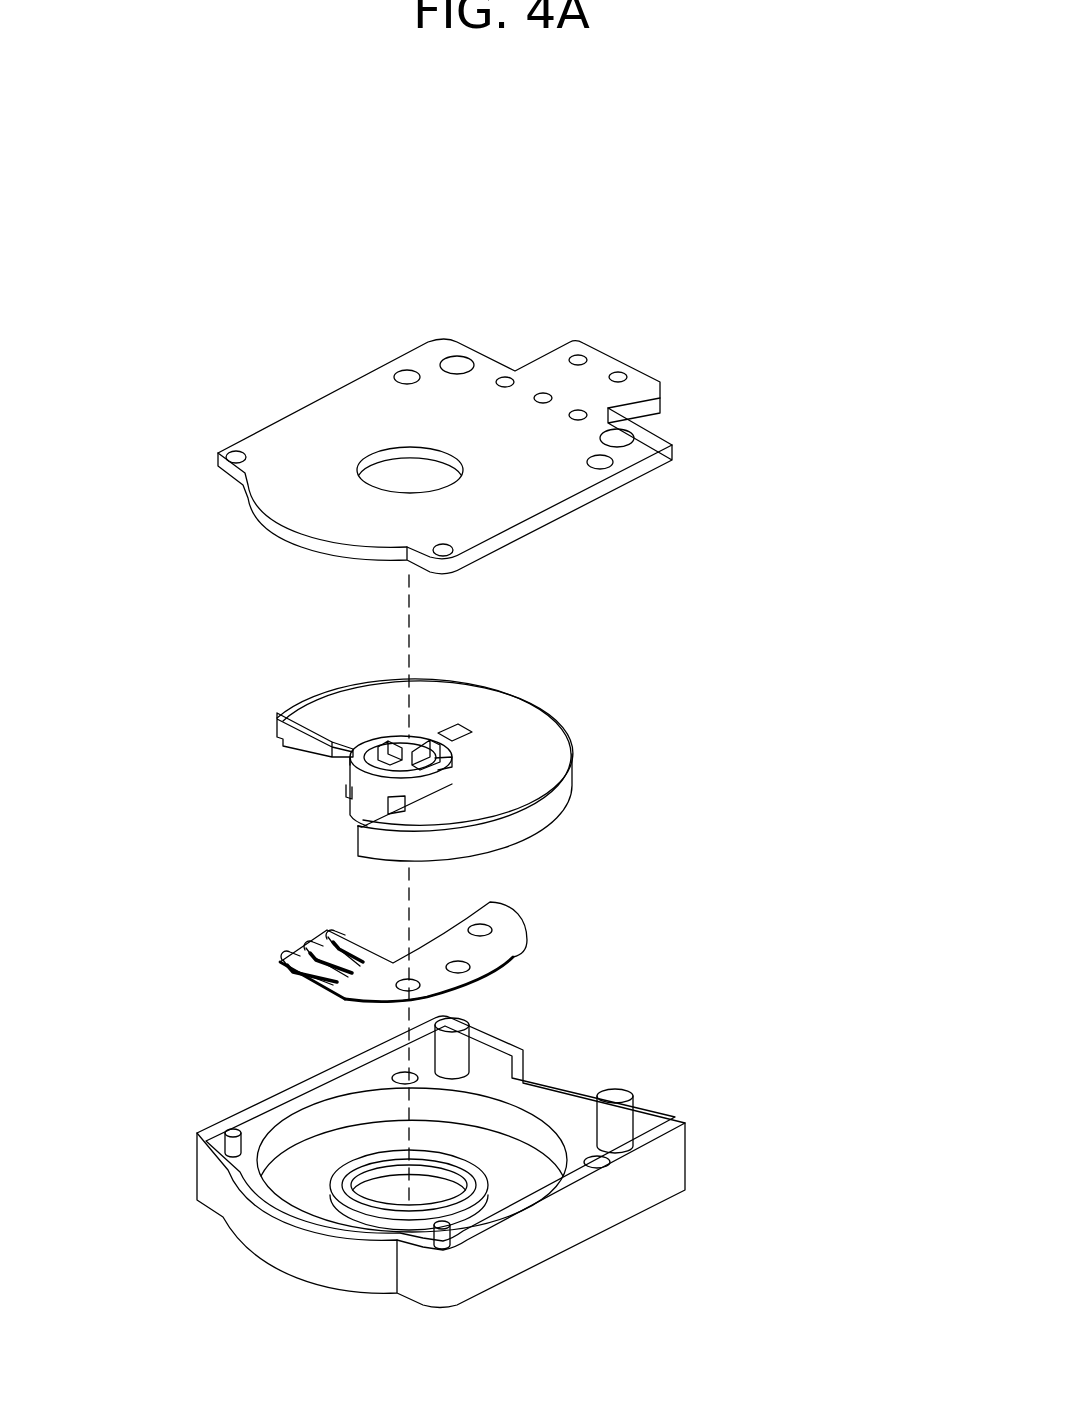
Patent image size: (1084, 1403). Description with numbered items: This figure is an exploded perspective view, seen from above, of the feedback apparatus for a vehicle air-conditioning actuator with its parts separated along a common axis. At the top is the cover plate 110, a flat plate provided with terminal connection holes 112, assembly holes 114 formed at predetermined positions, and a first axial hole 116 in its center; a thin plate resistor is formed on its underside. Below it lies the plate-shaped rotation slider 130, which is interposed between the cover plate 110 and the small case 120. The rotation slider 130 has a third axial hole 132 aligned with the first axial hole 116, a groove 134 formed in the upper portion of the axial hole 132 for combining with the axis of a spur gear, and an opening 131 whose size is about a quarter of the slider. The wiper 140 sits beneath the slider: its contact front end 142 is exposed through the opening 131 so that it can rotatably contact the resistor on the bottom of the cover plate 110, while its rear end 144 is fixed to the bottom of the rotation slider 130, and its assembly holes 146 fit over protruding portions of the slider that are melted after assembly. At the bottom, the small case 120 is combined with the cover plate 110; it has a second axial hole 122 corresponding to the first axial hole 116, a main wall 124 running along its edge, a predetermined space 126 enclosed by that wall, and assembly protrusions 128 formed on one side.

The cover plate 110 is at (357, 212).
The terminal connection holes 112 is at (578, 358).
The mounting holes 114 is at (453, 367).
The first axial hole 116 is at (410, 473).
The small case 120 is at (793, 902).
The second axial hole 122 is at (512, 1176).
The main wall 124 is at (663, 1170).
The predetermined space 126 is at (428, 1197).
The assembly protrusions 128 is at (457, 1050).
The rotation slider 130 is at (587, 745).
The opening 131 is at (317, 783).
The third axial hole 132 is at (385, 762).
The groove 134 is at (425, 752).
The wiper 140 is at (198, 865).
The contact front end 142 is at (323, 940).
The rear end 144 is at (438, 988).
The assembly holes 146 is at (477, 925).